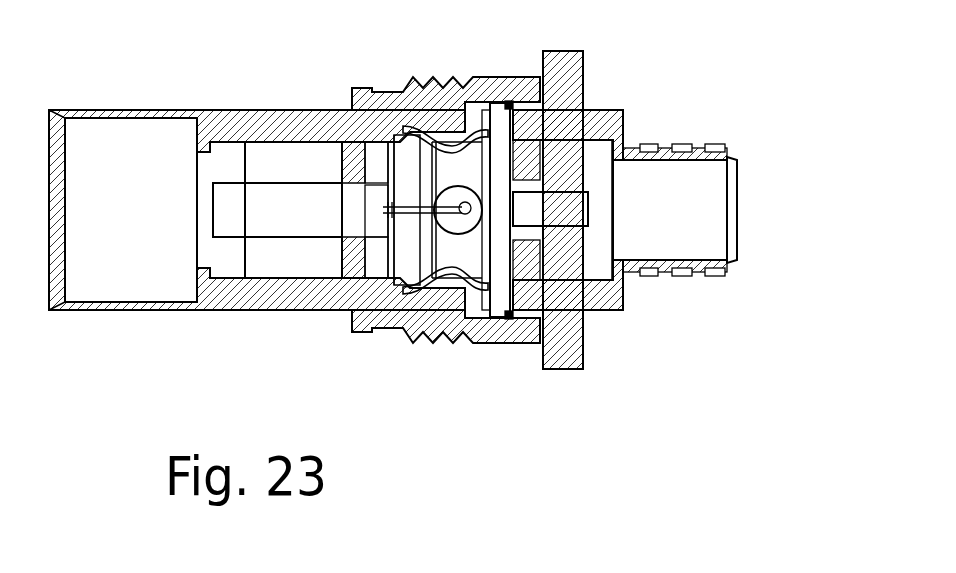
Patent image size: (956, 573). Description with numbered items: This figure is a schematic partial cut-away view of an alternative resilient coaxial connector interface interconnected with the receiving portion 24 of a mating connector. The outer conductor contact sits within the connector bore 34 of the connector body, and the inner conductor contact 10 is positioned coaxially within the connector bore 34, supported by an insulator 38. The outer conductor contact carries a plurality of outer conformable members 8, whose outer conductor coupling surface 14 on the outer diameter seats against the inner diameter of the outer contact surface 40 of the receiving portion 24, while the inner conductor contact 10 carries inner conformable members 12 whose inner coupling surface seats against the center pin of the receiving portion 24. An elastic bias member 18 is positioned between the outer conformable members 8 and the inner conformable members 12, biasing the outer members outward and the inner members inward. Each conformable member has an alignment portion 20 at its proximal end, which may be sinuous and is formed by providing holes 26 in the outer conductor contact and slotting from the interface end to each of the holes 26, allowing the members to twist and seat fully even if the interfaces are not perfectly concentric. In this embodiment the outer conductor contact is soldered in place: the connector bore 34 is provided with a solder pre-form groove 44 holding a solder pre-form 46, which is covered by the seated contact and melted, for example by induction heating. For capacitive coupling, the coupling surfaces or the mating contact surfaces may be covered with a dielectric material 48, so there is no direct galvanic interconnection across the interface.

The outer conformable members 8 is at (300, 141).
The inner conductor contact 10 is at (511, 271).
The inner conformable members 12 is at (390, 240).
The outer conductor coupling surface 14 is at (300, 141).
The elastic bias member 18 is at (415, 208).
The alignment portion 20 is at (457, 245).
The receiving portion 24 is at (213, 125).
The holes 26 is at (465, 208).
The connector bore 34 is at (563, 262).
The insulator 38 is at (515, 142).
The outer contact surface 40 is at (415, 310).
The solder pre-form groove 44 is at (567, 174).
The solder pre-form 46 is at (510, 107).
The dielectric material 48 is at (408, 208).